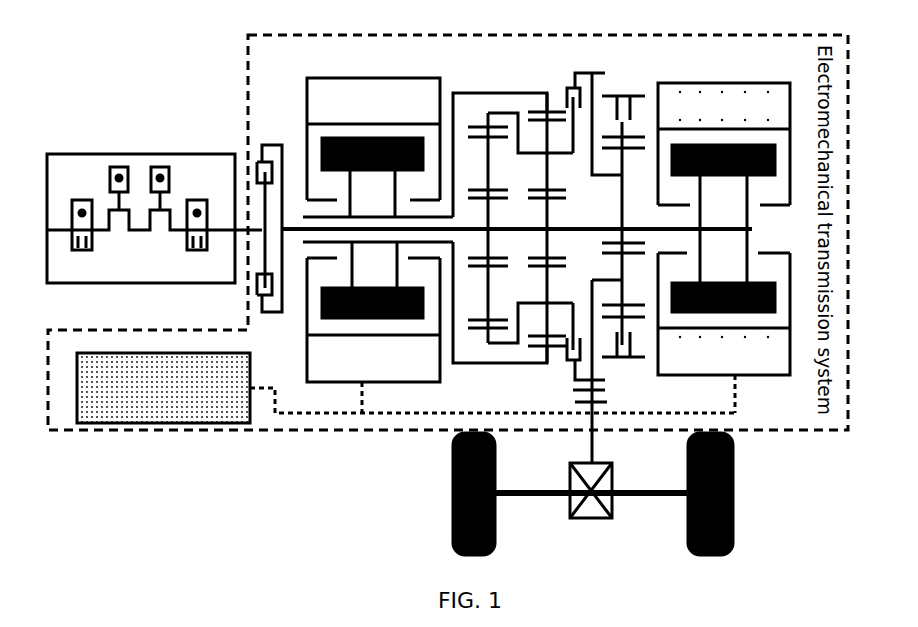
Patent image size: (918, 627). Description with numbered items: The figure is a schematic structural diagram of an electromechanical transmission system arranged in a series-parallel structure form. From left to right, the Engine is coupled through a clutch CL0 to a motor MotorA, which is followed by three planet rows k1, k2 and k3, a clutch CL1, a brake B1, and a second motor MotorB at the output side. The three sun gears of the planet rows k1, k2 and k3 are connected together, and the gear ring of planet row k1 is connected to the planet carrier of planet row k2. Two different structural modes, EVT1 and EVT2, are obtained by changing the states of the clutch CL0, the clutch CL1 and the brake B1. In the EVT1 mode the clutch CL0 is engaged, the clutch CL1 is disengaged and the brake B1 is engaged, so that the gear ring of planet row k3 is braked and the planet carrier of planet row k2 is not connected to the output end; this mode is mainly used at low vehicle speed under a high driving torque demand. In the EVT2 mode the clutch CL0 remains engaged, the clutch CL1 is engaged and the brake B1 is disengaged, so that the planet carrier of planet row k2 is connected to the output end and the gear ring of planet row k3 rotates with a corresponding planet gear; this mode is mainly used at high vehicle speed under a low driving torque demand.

The engine Engine is at (154, 198).
The clutch CL0 is at (270, 209).
The motor A MotorA is at (378, 217).
The clutch CL1 is at (560, 232).
The brake B1 is at (625, 209).
The planet row K1 k1 is at (520, 255).
The planet row K2 k2 is at (546, 245).
The planet row K3 k3 is at (624, 259).
The motor B MotorB is at (724, 215).